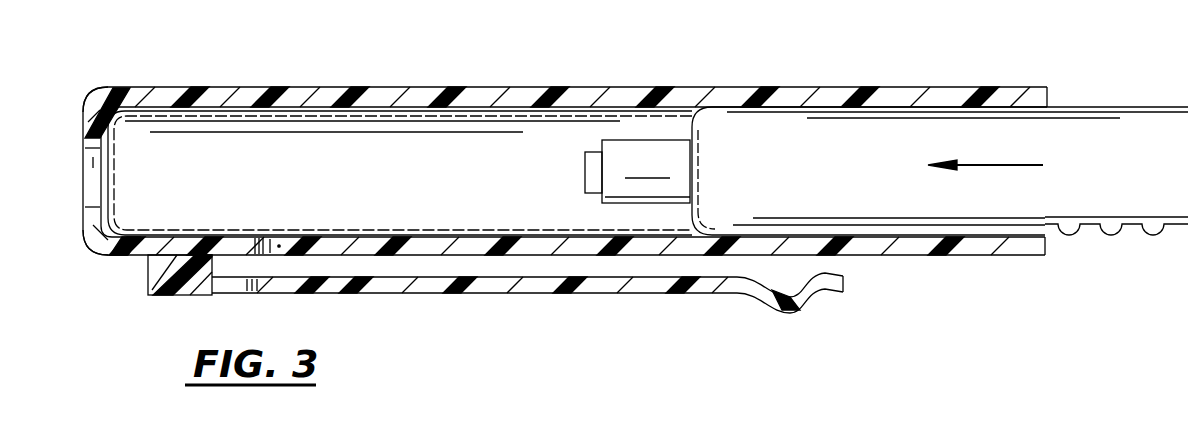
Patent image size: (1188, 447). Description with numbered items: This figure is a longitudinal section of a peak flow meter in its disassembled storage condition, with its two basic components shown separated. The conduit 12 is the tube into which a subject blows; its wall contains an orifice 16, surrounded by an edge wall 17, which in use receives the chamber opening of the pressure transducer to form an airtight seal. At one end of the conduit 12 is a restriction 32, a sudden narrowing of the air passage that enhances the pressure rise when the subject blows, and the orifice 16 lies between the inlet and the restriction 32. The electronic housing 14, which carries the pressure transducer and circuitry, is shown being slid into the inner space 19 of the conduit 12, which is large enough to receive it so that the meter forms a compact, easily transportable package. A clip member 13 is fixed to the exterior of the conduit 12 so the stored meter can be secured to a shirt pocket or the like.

The conduit 12 is at (307, 97).
The clip member 13 is at (426, 295).
The electronic housing 14 is at (1103, 107).
The orifice 16 is at (280, 242).
The edge wall 17 is at (262, 243).
The inner space 19 is at (425, 153).
The restriction 32 is at (88, 227).